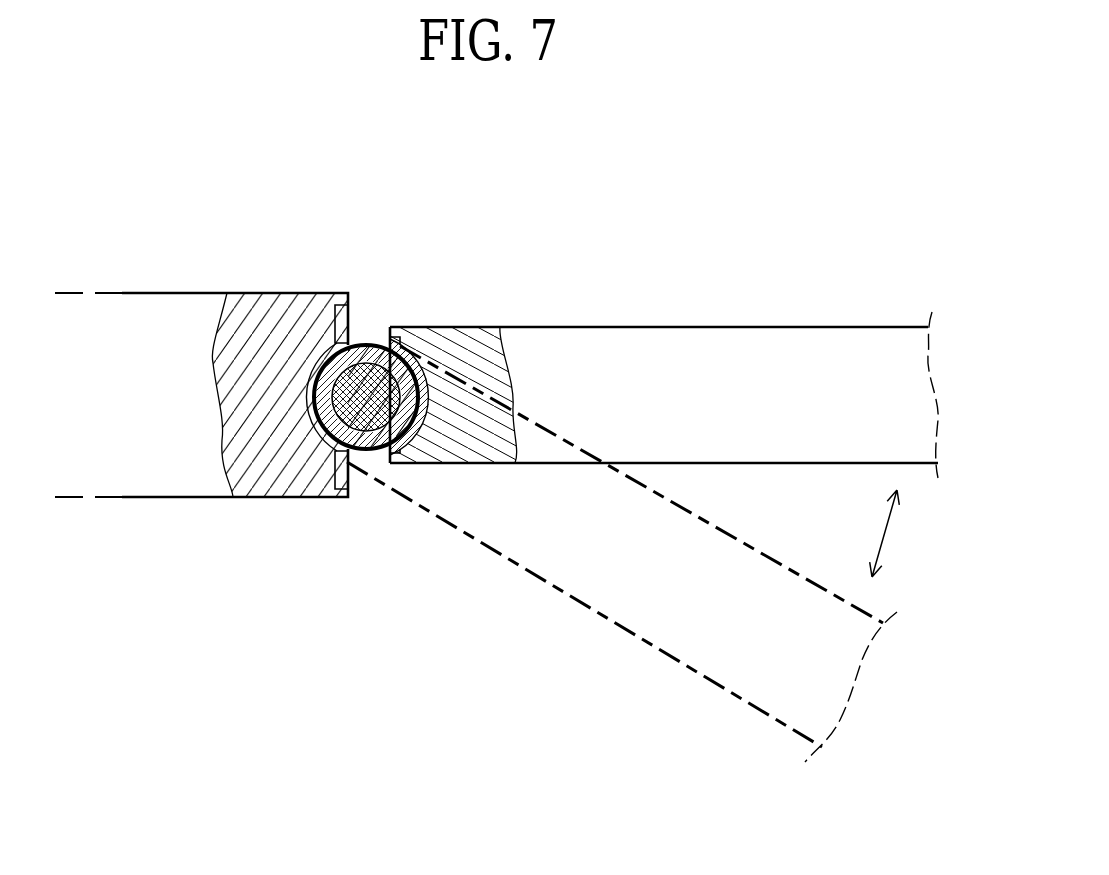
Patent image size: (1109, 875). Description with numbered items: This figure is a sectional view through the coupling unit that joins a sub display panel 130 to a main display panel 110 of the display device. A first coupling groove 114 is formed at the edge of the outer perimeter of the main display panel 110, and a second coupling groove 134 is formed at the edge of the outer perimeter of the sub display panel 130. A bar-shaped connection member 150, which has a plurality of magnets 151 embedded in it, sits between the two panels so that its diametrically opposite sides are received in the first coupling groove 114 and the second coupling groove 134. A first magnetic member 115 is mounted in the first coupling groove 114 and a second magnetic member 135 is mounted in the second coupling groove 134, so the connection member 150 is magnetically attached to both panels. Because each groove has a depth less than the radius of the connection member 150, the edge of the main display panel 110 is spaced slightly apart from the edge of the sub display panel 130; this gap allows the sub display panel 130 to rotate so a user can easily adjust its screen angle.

The main display panel 110 is at (150, 293).
The first coupling groove 114 is at (307, 440).
The first magnetic member 115 is at (302, 293).
The sub display panel 130 is at (703, 340).
The second coupling groove 134 is at (415, 462).
The second magnetic member 135 is at (468, 360).
The connection member 150 is at (370, 347).
The magnets 151 is at (410, 337).